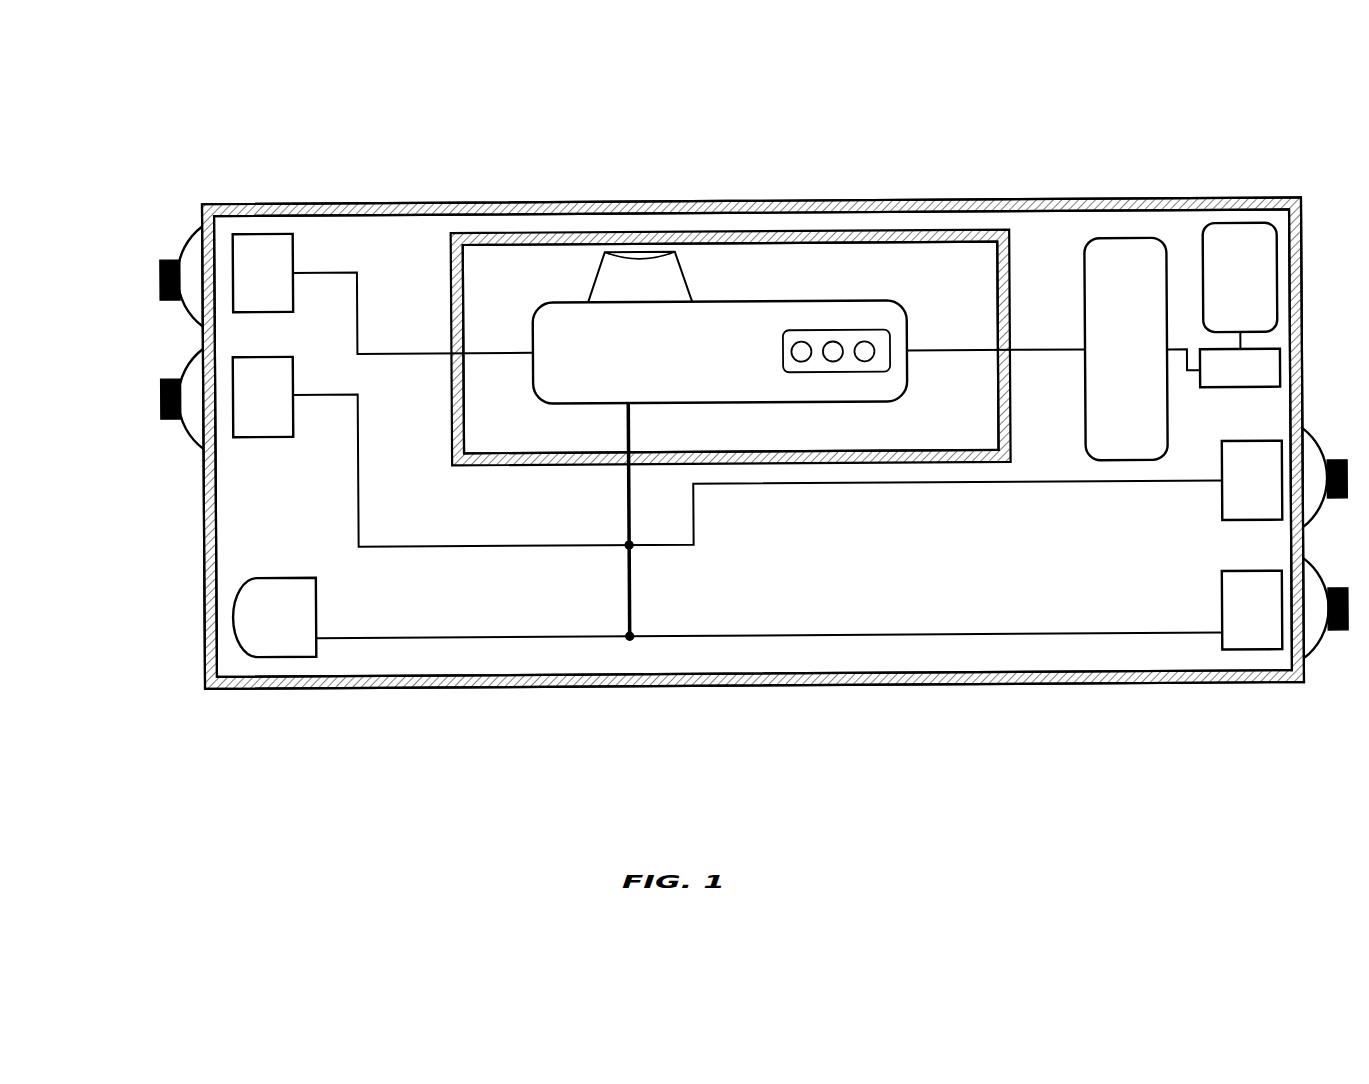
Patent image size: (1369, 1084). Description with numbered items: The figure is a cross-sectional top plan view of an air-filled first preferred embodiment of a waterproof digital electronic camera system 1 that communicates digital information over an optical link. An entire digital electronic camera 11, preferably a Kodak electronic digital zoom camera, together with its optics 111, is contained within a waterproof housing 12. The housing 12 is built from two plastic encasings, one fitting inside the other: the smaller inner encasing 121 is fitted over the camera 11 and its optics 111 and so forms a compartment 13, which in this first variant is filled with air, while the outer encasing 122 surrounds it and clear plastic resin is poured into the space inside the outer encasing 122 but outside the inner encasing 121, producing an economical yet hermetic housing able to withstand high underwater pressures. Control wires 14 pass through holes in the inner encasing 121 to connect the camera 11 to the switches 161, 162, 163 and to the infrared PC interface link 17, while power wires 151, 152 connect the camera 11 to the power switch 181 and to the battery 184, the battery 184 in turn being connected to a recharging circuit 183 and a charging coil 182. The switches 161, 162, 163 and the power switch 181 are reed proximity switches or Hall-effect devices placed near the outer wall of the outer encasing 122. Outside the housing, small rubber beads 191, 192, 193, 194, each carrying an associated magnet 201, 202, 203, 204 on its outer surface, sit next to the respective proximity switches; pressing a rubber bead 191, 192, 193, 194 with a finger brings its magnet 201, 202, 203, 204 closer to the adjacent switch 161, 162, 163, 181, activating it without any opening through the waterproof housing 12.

The waterproof digital electronic camera system 1 is at (473, 202).
The digital electronic camera 11 is at (740, 360).
The optics 111 is at (657, 280).
The housing 12 is at (791, 207).
The inner encasing 121 is at (873, 228).
The outer encasing 122 is at (1027, 208).
The compartment 13 is at (502, 302).
The control wires 14 is at (627, 610).
The power wire 151 is at (345, 272).
The power wire 152 is at (1052, 350).
The switch 161 is at (1254, 612).
The switch 162 is at (1247, 480).
The switch 163 is at (262, 410).
The infrared PC interface link 17 is at (267, 618).
The power switch 181 is at (263, 273).
The charging coil 182 is at (1228, 277).
The recharging circuit 183 is at (1257, 368).
The battery 184 is at (1120, 320).
The rubber bead 191 is at (1317, 647).
The rubber bead 192 is at (1307, 482).
The rubber bead 193 is at (192, 417).
The rubber bead 194 is at (192, 263).
The magnet 201 is at (1343, 633).
The magnet 202 is at (1333, 500).
The magnet 203 is at (160, 397).
The magnet 204 is at (160, 289).